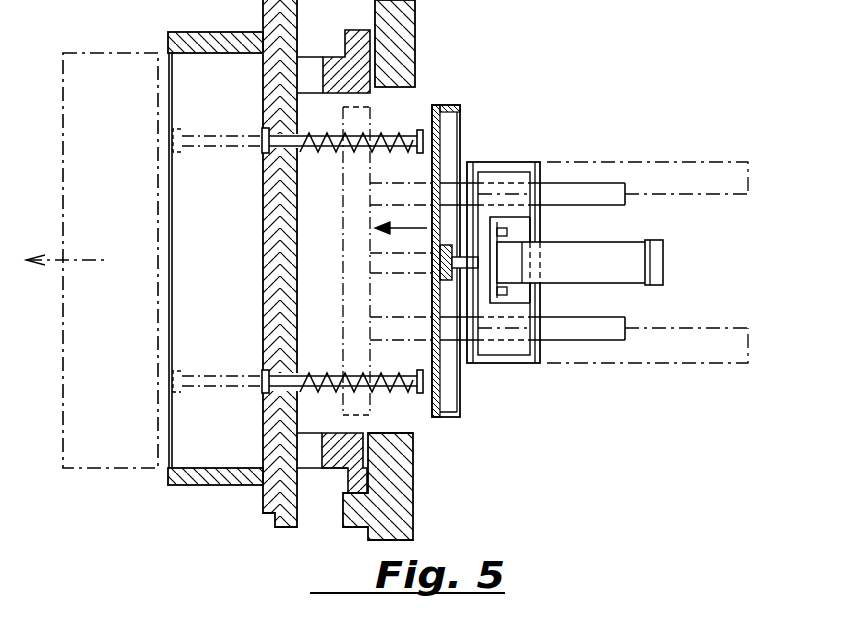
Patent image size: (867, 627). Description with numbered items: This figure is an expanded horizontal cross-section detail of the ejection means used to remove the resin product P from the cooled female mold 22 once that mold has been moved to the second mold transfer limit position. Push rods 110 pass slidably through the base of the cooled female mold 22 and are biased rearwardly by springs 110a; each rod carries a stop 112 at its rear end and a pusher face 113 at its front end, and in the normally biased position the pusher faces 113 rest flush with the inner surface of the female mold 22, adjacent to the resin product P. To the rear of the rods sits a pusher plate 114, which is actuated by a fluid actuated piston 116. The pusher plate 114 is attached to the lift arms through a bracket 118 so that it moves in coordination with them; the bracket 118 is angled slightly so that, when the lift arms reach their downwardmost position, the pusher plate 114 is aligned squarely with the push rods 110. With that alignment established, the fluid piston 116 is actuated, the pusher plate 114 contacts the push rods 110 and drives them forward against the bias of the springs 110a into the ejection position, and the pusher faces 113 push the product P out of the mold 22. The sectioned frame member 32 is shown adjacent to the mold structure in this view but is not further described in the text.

The resin product P is at (88, 470).
The cooled female mold 22 is at (218, 482).
The frame member 32 is at (375, 510).
The push rods 110 is at (392, 145).
The springs 110a is at (325, 150).
The stops 112 is at (420, 132).
The pusher faces 113 is at (262, 150).
The pusher plate 114 is at (458, 109).
The fluid actuated piston 116 is at (613, 252).
The bracket 118 is at (505, 360).